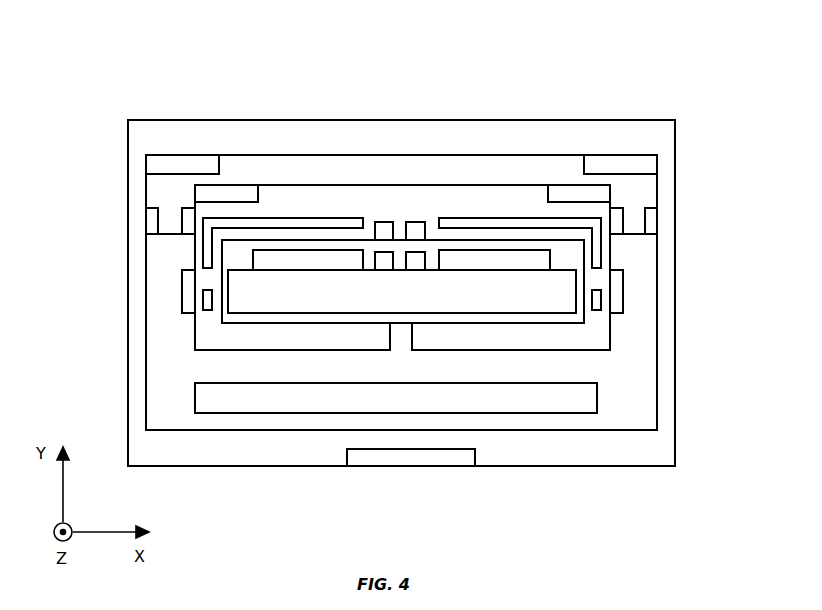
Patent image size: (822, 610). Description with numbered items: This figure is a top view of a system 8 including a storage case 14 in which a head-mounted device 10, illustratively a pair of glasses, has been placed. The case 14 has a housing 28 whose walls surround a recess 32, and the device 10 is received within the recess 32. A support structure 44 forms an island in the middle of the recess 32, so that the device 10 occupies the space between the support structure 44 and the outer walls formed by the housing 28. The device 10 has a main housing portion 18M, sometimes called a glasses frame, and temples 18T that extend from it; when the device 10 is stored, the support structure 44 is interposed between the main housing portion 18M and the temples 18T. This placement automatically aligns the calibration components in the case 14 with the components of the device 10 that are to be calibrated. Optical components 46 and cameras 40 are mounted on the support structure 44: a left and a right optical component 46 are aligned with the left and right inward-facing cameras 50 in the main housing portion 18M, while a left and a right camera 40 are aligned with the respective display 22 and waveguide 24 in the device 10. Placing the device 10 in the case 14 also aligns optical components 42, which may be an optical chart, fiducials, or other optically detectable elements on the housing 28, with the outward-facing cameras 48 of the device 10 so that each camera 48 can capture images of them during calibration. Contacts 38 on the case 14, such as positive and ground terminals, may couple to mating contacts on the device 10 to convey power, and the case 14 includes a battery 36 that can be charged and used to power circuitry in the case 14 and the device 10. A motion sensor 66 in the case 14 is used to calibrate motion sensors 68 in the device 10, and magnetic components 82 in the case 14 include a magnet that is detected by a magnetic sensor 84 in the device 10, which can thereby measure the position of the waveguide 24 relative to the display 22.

The MEMS device 8 is at (652, 74).
The head-mounted device 10 is at (330, 185).
The case 14 is at (267, 120).
The main portion 18M is at (447, 192).
The temples 18T is at (203, 343).
The displays 22 is at (207, 263).
The waveguides 24 is at (295, 218).
The housing 28 is at (668, 142).
The recess 32 is at (650, 360).
The battery 36 is at (600, 398).
The contacts 38 is at (183, 293).
The optical sensors 40 is at (312, 258).
The optical structures 42 is at (183, 165).
The support structure 44 is at (391, 348).
The optical components 46 is at (384, 270).
The outward-facing cameras 48 is at (200, 197).
The inward-facing cameras 50 is at (416, 222).
The motion sensor 66 is at (412, 462).
The motion sensors 68 is at (212, 295).
The magnetic components 82 is at (152, 222).
The magnetic sensor 84 is at (190, 237).